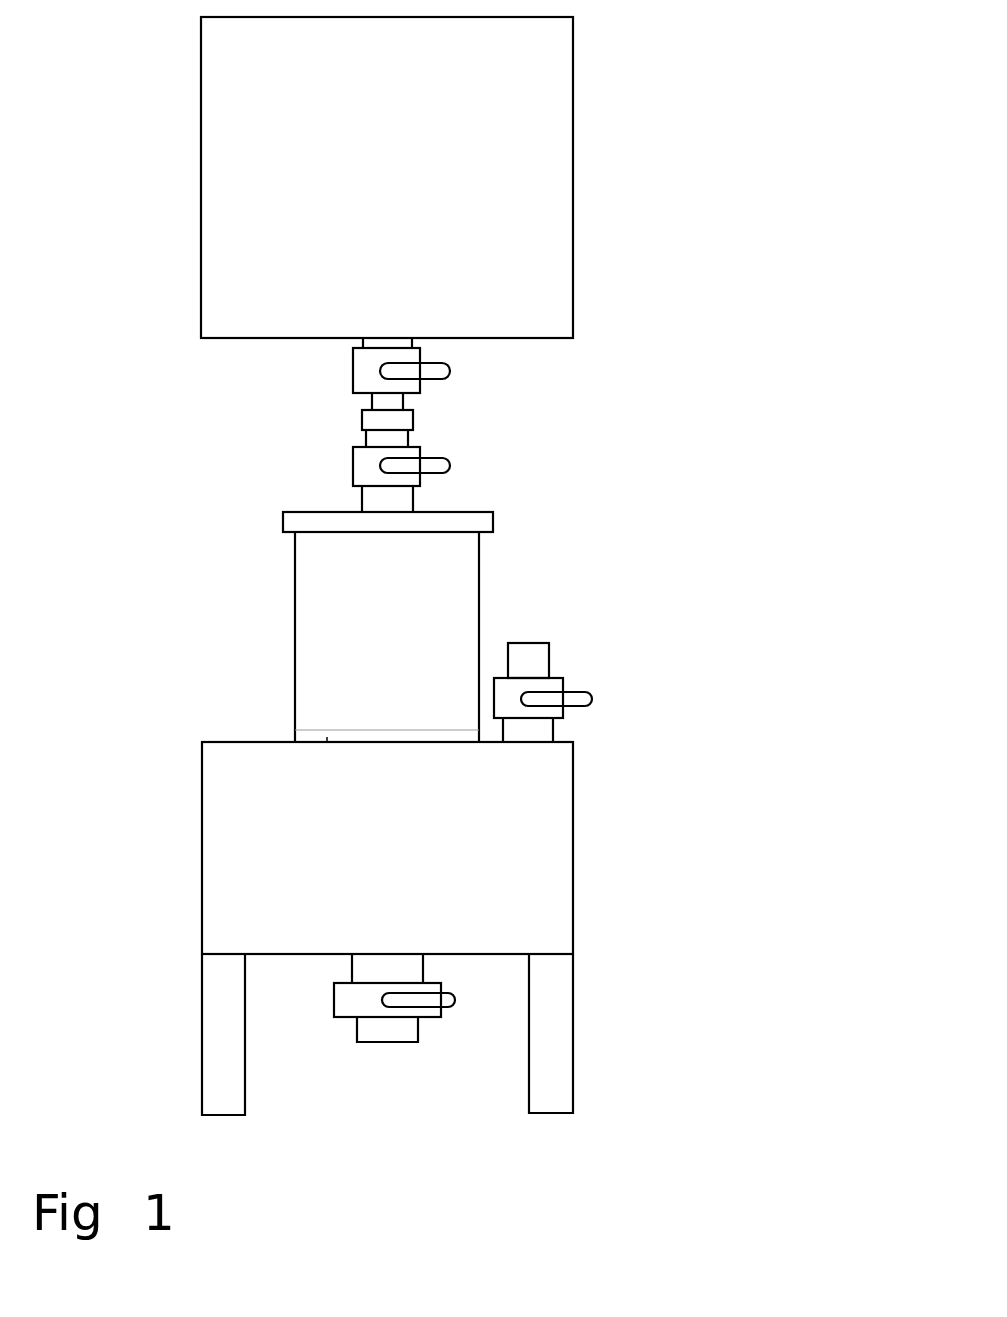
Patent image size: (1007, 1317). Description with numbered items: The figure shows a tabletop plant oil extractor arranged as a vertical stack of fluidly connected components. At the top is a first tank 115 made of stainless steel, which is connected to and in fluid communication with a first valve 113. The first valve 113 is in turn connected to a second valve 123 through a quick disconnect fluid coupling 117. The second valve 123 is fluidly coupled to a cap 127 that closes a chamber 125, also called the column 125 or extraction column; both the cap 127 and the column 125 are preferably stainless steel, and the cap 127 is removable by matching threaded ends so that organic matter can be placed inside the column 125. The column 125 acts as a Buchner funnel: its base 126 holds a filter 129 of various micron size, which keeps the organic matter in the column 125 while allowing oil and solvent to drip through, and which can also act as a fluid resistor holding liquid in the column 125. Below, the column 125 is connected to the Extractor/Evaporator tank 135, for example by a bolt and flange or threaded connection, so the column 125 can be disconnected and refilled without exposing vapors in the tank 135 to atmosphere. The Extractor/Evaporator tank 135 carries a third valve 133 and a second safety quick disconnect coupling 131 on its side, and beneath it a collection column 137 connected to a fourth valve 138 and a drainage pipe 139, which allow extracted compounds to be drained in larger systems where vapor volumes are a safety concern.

The first tank 115 is at (573, 254).
The first valve 113 is at (420, 387).
The quick disconnect fluid coupling 117 is at (362, 420).
The second valve 123 is at (420, 477).
The cap 127 is at (283, 520).
The chamber (column) 125 is at (479, 633).
The filter 129 is at (290, 732).
The second safety quick disconnect coupling 131 is at (549, 660).
The third valve 133 is at (563, 685).
The Extractor/Evaporator tank 135 is at (573, 880).
The base 126 is at (327, 742).
The collection column 137 is at (368, 968).
The fourth valve 138 is at (442, 1012).
The drainage pipe 139 is at (418, 1028).